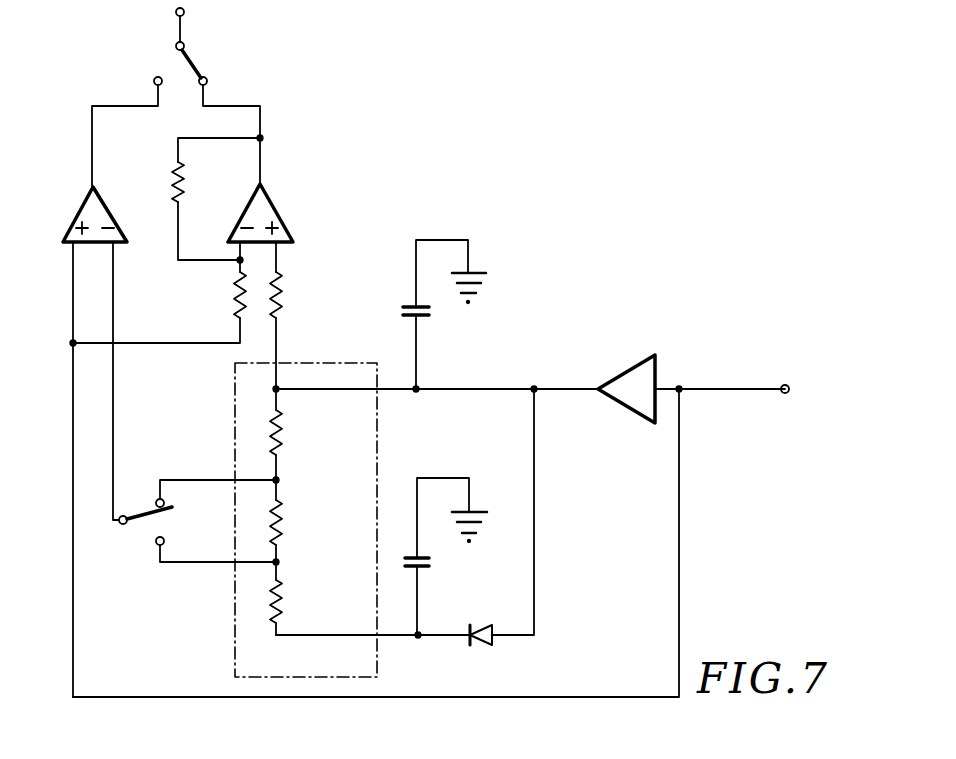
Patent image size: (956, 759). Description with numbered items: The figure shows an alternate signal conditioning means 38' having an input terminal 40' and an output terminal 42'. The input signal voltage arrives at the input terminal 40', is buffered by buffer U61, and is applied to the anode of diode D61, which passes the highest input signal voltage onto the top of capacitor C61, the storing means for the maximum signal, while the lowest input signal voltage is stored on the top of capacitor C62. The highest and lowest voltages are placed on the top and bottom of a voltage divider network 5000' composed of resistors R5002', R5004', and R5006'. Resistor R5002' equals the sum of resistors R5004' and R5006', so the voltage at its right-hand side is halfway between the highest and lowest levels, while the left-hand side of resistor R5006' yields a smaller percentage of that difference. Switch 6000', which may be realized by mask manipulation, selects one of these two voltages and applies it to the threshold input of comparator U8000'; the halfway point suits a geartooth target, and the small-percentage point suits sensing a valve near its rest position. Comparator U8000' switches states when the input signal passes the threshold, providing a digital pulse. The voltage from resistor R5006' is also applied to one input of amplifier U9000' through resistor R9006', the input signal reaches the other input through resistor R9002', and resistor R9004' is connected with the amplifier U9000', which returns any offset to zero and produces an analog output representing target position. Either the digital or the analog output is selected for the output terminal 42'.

The signal conditioning means 38' is at (434, 352).
The input terminal 40' is at (805, 370).
The output terminal 42' is at (162, 46).
The comparator U8000' is at (116, 430).
The amplifier U9000' is at (285, 217).
The resistor R9004' is at (217, 199).
The resistor R9002' is at (159, 301).
The resistor R9006' is at (314, 330).
The capacitor C62 is at (444, 314).
The capacitor C61 is at (446, 556).
The buffer U61 is at (616, 388).
The diode D61 is at (478, 621).
The voltage divider network 5000' is at (306, 520).
The resistor R5006' is at (312, 436).
The resistor R5004' is at (316, 522).
The resistor R5002' is at (317, 598).
The switch 6000' is at (197, 490).